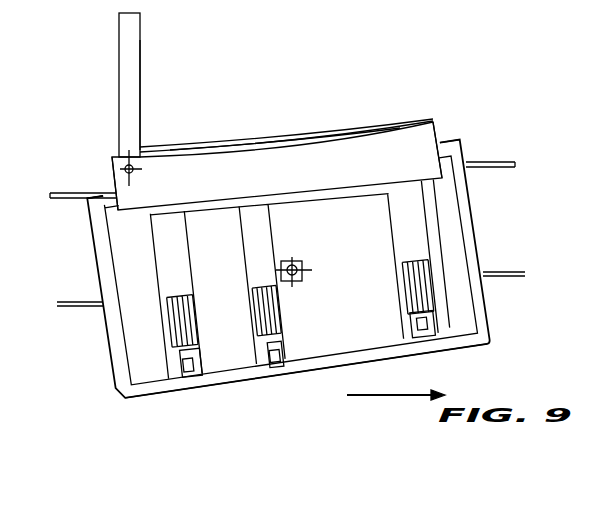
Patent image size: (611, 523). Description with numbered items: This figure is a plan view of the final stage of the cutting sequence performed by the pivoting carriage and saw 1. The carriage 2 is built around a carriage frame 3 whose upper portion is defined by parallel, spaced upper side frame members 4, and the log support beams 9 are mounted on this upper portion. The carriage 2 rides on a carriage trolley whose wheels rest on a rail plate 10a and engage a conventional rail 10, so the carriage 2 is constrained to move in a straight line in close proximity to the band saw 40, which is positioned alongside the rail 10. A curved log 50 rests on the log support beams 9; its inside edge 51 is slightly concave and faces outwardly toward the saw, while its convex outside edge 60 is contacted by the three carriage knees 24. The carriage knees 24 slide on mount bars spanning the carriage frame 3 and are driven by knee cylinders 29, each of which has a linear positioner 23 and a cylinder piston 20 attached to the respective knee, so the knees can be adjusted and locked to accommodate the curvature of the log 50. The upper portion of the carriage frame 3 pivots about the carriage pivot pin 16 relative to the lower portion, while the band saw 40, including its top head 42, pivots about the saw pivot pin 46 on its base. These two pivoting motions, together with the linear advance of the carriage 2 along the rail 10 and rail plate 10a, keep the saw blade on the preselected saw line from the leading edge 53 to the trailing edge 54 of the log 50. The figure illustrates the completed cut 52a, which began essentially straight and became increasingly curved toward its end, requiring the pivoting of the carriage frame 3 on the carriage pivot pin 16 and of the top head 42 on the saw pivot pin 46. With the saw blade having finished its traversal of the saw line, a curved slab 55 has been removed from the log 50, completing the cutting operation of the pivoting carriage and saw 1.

The pivoting carriage and saw 1 is at (194, 44).
The band saw 40 is at (151, 46).
The top head 42 is at (143, 86).
The log 50 is at (154, 147).
The inside edge 51 is at (212, 147).
The curved slab 55 is at (246, 145).
The cut 52a is at (330, 148).
The leading edge 53 is at (468, 120).
The trailing edge 54 is at (110, 160).
The saw pivot pin 46 is at (142, 170).
The carriage 2 is at (207, 403).
The carriage frame 3 is at (265, 393).
The upper side frame members 4 is at (313, 373).
The log support beams 9 is at (103, 200).
The rail plate 10a is at (72, 200).
The rail 10 is at (75, 300).
The outside edge 60 is at (316, 200).
The carriage knees 24 is at (243, 220).
The carriage pivot pin 16 is at (302, 262).
The cylinder pistons 20 is at (193, 311).
The linear positioners 23 is at (268, 352).
The knee cylinders 29 is at (263, 337).